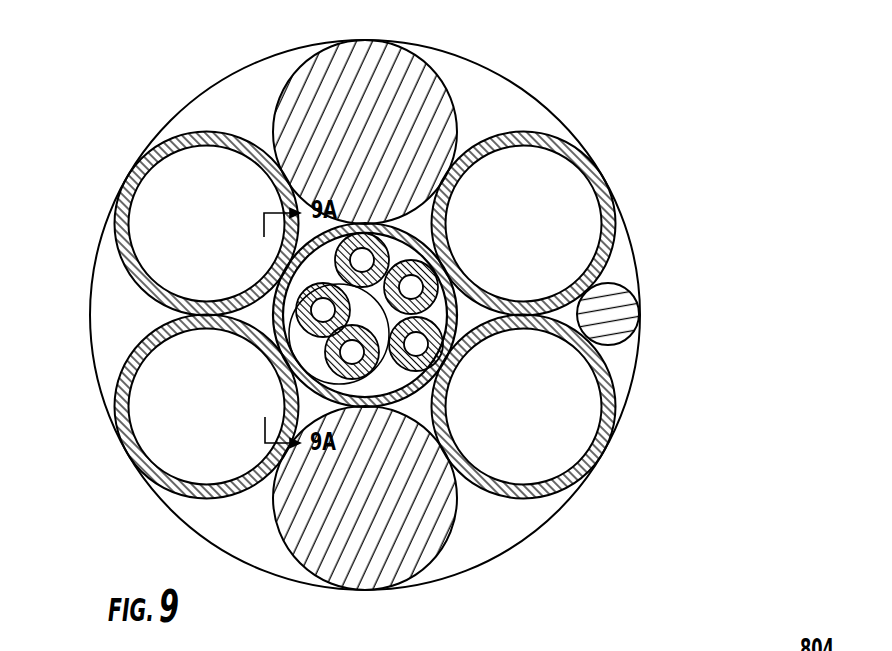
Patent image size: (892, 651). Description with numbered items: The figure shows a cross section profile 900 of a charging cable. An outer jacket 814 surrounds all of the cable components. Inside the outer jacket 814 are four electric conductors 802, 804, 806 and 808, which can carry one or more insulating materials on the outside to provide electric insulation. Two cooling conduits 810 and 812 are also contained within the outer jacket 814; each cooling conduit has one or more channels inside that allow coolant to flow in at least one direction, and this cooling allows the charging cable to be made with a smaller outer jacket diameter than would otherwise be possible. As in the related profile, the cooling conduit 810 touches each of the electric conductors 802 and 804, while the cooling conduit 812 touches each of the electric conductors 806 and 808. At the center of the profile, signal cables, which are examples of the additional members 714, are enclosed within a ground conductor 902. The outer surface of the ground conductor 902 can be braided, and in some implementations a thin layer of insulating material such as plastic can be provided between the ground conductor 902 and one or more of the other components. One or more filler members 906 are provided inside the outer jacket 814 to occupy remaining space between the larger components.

The profile 900 is at (691, 481).
The electric conductor 802 is at (531, 134).
The electric conductor 804 is at (189, 134).
The electric conductor 806 is at (116, 386).
The electric conductor 808 is at (538, 497).
The cooling conduit 810 is at (311, 58).
The cooling conduit 812 is at (292, 560).
The outer jacket 814 is at (570, 146).
The ground conductor 902 is at (382, 230).
The filler member 906 is at (605, 283).
The additional member 714 is at (303, 250).